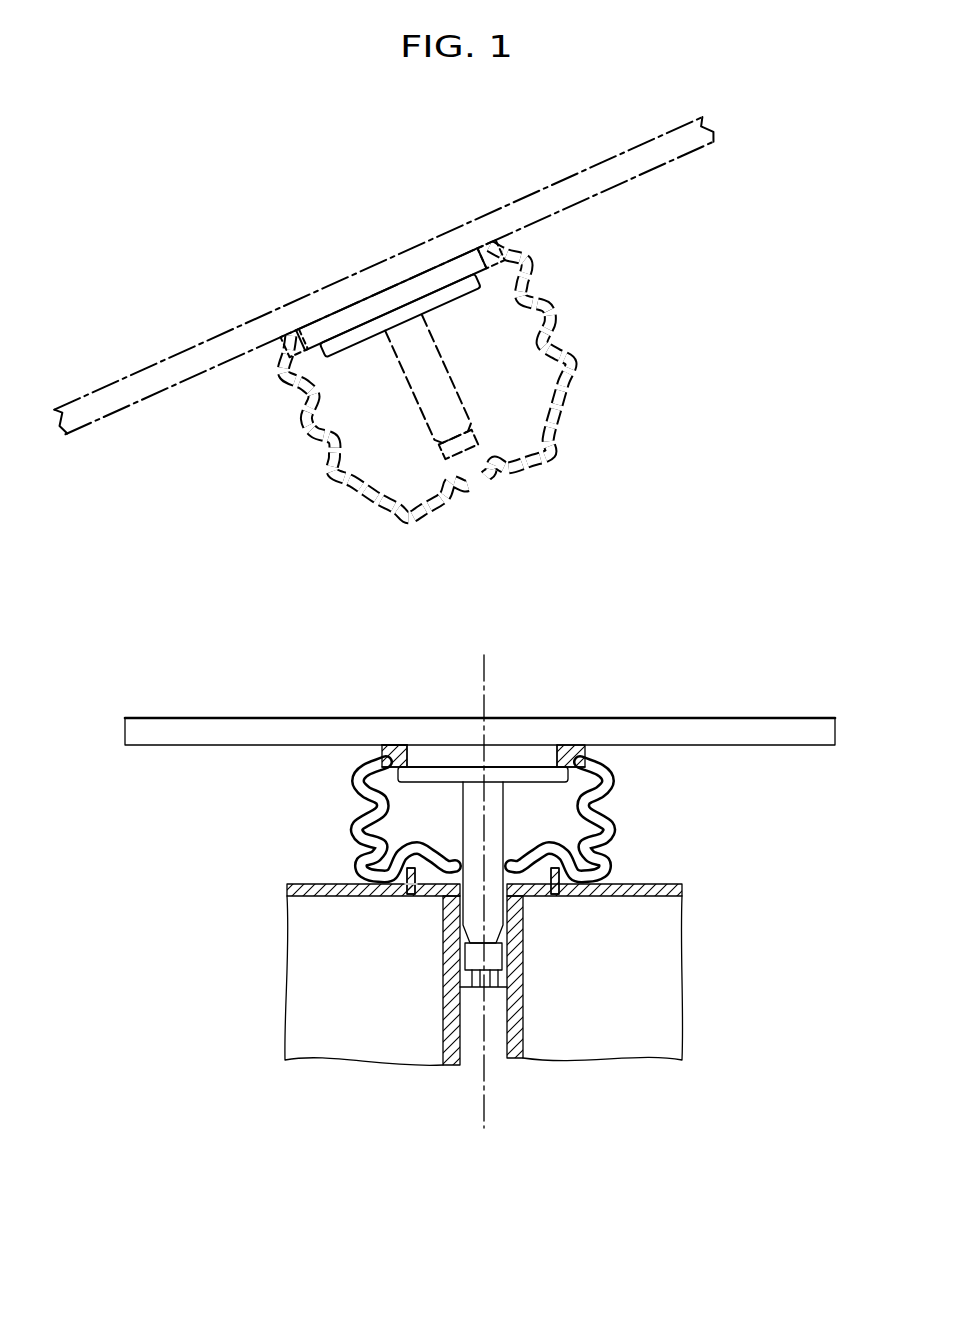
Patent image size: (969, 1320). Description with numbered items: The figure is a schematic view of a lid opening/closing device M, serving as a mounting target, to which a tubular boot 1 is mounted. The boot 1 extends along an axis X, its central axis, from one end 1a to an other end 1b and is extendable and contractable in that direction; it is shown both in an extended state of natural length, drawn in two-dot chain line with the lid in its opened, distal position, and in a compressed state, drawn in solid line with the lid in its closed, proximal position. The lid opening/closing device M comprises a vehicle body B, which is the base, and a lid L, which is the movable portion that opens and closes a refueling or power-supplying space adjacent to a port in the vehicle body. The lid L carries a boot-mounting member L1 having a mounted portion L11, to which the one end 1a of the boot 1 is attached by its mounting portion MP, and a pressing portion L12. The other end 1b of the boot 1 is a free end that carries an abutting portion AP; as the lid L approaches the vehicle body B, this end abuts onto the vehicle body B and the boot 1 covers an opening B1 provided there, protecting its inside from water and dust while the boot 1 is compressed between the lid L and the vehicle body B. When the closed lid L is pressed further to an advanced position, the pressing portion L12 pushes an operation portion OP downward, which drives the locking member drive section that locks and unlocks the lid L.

The lid opening/closing device M is at (573, 644).
The boot 1 is at (533, 884).
The one end 1a is at (397, 748).
The other end 1b is at (410, 892).
The lid L is at (480, 697).
The mounting portion MP is at (387, 755).
The boot-mounting member L1 is at (584, 792).
The mounted portion L11 is at (545, 752).
The pressing portion L12 is at (497, 798).
The vehicle body B is at (642, 892).
The opening B1 is at (607, 859).
The abutting portion AP is at (387, 885).
The operation portion OP is at (495, 950).
The axis X is at (484, 1082).